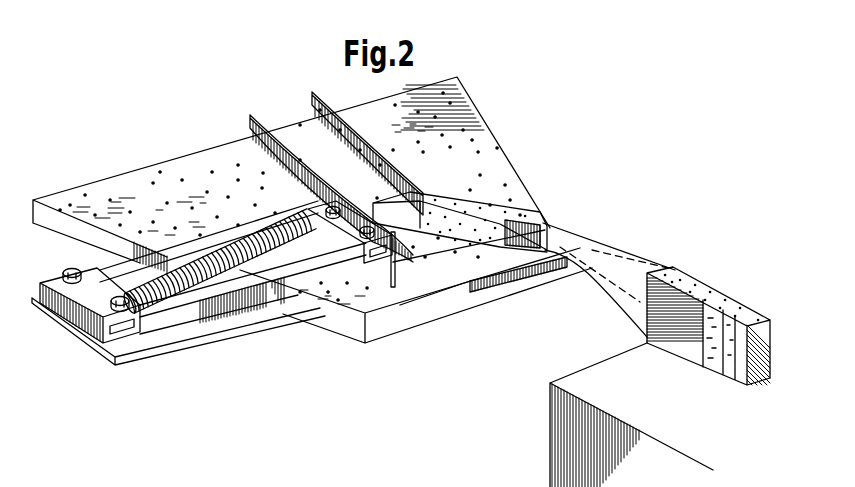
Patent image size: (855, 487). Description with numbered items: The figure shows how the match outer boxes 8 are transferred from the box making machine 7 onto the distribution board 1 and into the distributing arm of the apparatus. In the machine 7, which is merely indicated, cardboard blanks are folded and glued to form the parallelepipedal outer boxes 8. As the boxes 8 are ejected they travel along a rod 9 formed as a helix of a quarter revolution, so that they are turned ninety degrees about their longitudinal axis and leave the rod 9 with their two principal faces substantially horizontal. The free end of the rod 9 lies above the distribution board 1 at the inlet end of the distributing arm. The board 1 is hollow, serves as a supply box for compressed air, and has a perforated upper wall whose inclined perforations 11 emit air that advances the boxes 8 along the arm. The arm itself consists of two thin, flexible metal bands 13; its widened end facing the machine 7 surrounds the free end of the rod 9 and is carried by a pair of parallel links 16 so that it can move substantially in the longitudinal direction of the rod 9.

The distribution board 1 is at (102, 187).
The perforations 11 is at (217, 157).
The thin, flexible metal bands 13 is at (312, 93).
The match outer boxes 8 is at (507, 207).
The rod 9 is at (597, 247).
The machine 7 is at (553, 408).
The parallel links 16 is at (100, 277).